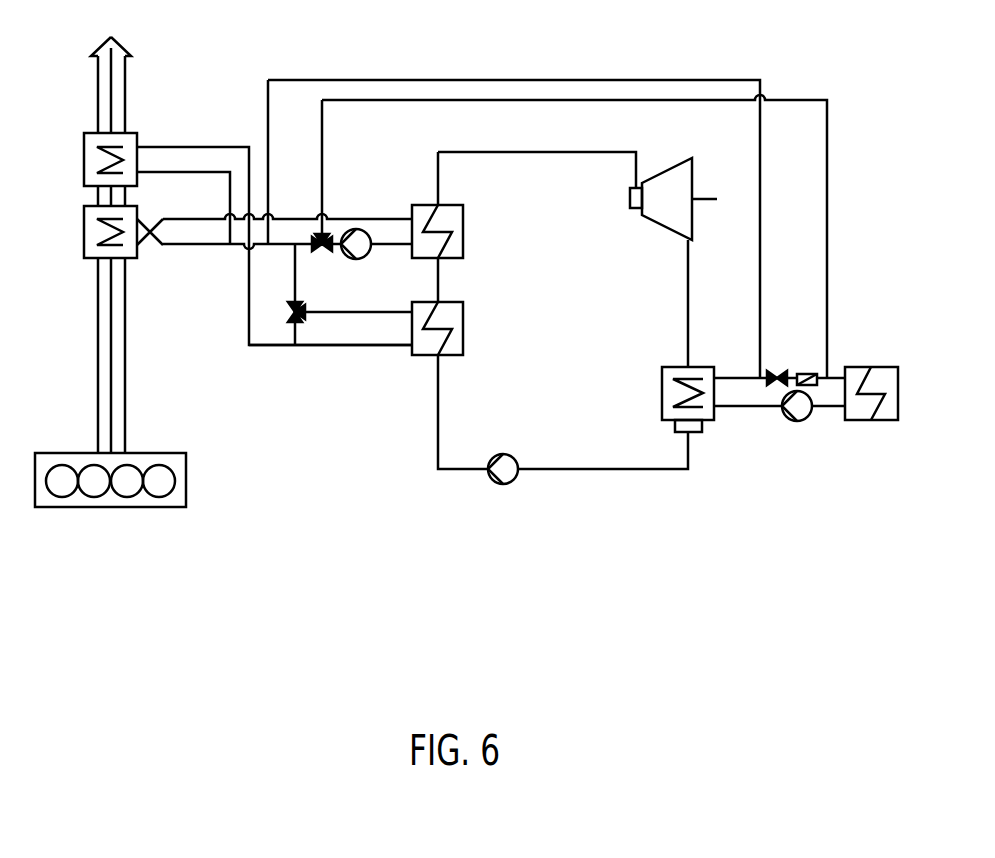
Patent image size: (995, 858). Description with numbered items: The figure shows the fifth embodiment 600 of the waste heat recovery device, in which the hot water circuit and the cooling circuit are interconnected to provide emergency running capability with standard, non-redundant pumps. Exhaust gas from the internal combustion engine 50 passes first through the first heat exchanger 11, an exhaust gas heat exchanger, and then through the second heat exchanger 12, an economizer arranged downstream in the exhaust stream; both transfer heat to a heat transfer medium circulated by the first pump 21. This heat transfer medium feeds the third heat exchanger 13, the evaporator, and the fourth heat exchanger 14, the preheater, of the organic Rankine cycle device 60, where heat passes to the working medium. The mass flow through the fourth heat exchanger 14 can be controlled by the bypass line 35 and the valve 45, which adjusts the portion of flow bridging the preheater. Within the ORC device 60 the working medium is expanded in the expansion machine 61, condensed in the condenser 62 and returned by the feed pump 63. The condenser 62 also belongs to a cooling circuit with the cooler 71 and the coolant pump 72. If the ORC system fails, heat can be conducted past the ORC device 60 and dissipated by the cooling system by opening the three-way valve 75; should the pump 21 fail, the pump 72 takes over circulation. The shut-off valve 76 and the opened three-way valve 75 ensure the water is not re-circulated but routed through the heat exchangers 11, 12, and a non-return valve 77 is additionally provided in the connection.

The first heat exchanger 11 is at (84, 219).
The second heat exchanger 12 is at (84, 147).
The third heat exchanger 13 is at (463, 217).
The fourth heat exchanger 14 is at (463, 314).
The first pump 21 is at (366, 256).
The bypass line 35 is at (296, 334).
The valve 45 is at (301, 306).
The internal combustion engine 50 is at (160, 508).
The organic Rankine cycle device 60 is at (598, 320).
The expansion machine 61 is at (655, 170).
The condenser 62 is at (705, 367).
The feed pump 63 is at (491, 480).
The cooler 71 is at (850, 367).
The coolant pump 72 is at (786, 418).
The 3-way valve 75 is at (317, 234).
The shut-off valve 76 is at (772, 370).
The non-return valve 77 is at (805, 372).
The fifth embodiment 600 is at (566, 63).